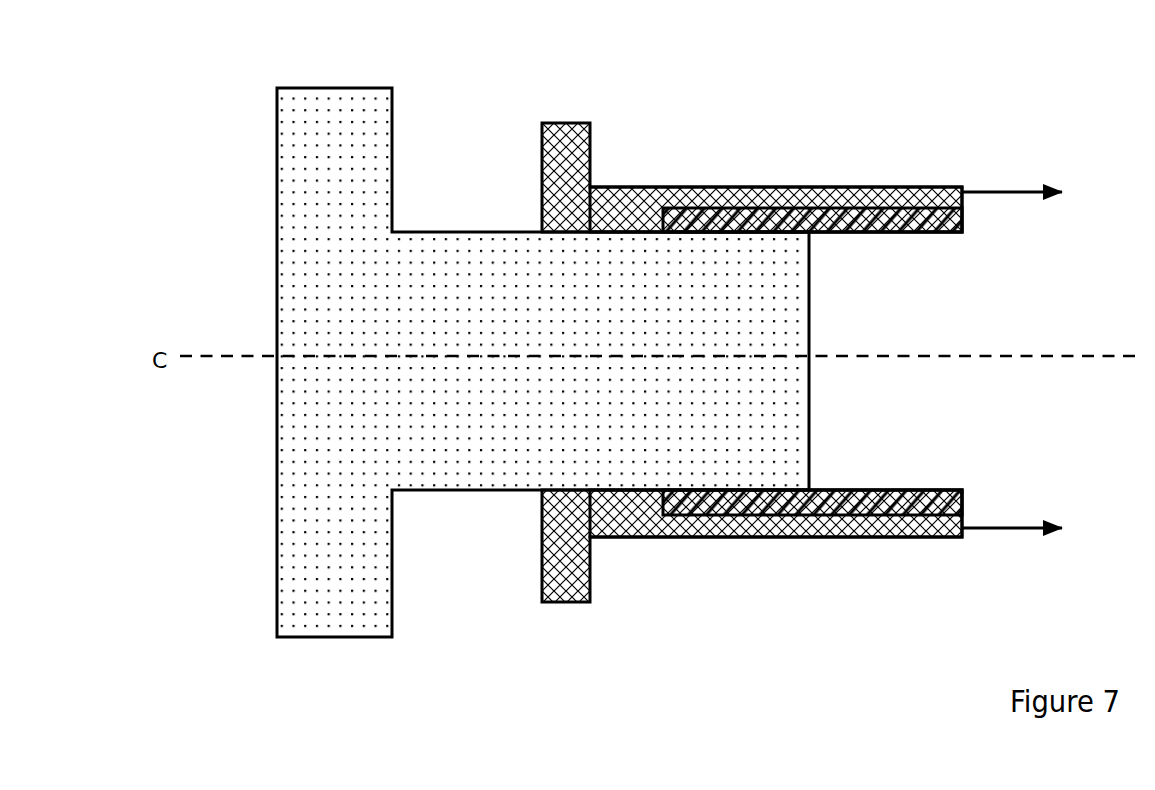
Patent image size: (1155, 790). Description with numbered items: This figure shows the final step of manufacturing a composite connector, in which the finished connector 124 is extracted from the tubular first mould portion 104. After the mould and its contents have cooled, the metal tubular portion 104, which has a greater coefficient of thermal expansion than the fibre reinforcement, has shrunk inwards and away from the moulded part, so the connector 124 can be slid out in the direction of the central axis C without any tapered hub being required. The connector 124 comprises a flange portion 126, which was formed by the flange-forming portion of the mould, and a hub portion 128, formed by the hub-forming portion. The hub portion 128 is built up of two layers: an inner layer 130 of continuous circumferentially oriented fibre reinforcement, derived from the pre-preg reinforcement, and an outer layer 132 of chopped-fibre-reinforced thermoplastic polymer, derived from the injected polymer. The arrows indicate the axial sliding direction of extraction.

The tubular first mould portion 104 is at (333, 217).
The connector 124 is at (802, 312).
The flange portion 126 is at (589, 125).
The hub portion 128 is at (816, 187).
The inner layer 130 is at (940, 232).
The outer layer 132 is at (950, 187).